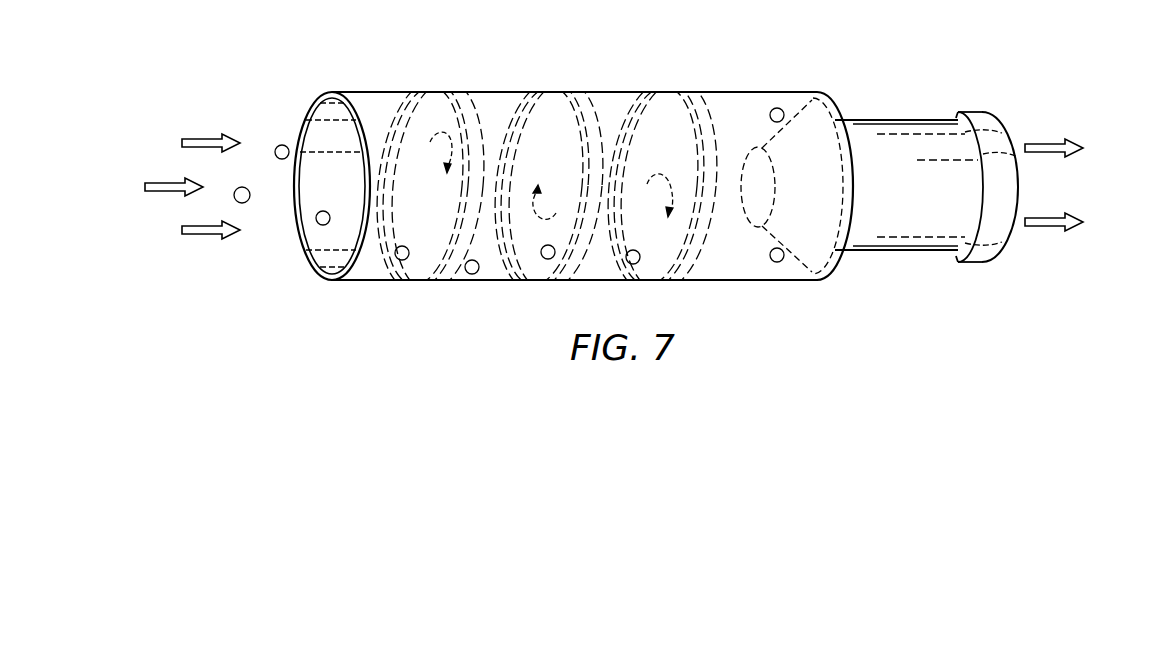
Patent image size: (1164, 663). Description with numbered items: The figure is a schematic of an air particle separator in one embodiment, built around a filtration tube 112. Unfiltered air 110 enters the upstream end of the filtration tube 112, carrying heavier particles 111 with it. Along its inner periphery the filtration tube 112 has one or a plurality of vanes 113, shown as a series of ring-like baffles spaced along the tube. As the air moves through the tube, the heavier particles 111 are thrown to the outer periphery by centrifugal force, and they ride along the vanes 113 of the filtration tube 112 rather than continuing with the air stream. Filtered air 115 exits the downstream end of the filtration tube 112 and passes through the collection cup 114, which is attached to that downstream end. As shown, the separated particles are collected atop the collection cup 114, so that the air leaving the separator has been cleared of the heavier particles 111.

The unfiltered air 110 is at (200, 150).
The heavier particles 111 is at (280, 146).
The filtration tube 112 is at (495, 87).
The vanes 113 is at (590, 126).
The collection cup 114 is at (905, 120).
The filtered air 115 is at (1085, 146).